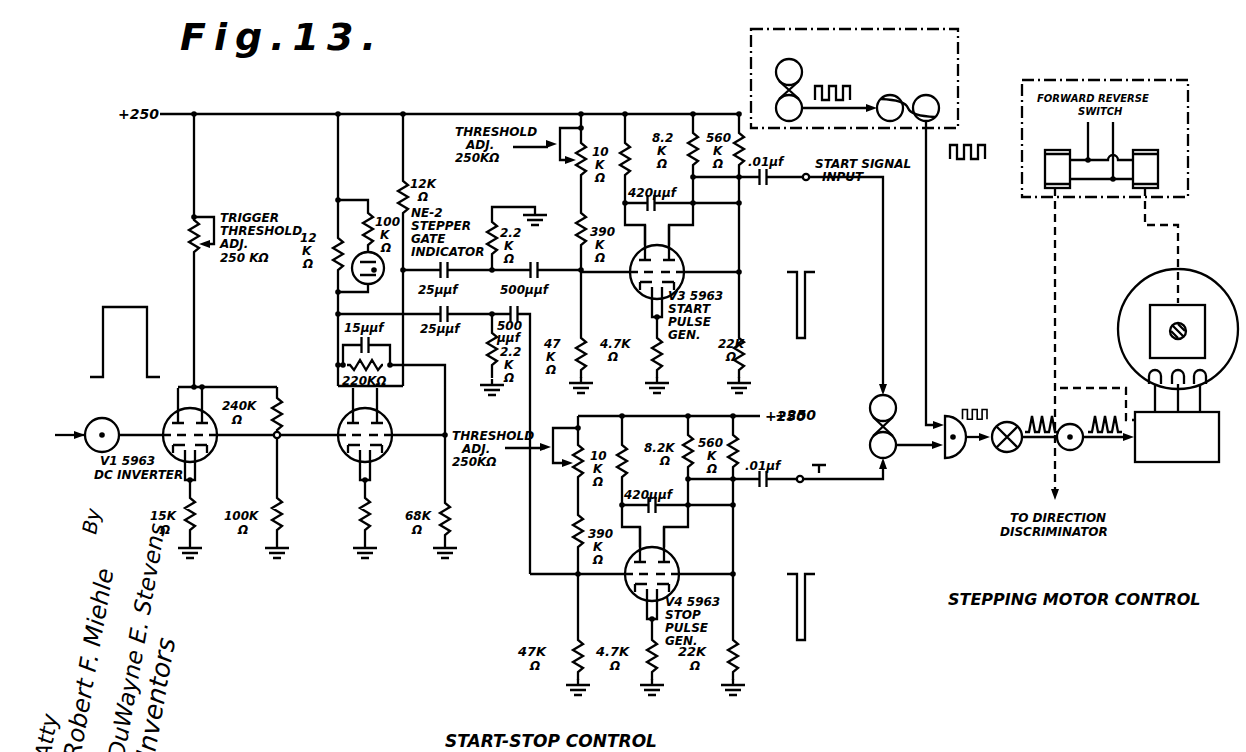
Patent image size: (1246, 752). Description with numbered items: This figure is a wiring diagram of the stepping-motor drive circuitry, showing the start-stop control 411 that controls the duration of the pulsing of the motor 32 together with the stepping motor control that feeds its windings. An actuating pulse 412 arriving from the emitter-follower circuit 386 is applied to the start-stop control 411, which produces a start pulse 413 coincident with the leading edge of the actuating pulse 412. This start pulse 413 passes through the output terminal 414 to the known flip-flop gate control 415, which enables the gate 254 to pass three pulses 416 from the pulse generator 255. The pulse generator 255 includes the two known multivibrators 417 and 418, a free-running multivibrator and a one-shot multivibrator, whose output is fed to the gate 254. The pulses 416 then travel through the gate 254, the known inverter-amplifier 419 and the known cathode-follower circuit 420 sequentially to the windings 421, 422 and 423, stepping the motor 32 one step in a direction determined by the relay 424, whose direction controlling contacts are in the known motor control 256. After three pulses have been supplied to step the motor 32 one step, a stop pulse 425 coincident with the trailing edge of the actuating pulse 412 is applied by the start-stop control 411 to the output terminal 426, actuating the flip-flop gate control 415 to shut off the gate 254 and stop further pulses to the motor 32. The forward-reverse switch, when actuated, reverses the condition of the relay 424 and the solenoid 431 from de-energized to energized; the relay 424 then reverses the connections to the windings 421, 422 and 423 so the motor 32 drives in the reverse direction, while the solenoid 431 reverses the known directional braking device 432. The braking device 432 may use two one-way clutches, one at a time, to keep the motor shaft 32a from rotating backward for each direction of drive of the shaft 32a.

The motor 32 is at (1222, 282).
The motor shaft 32a is at (1170, 333).
The gate 254 is at (958, 460).
The pulse generator 255 is at (966, 50).
The motor control 256 is at (1170, 462).
The emitter-follower circuit 386 is at (120, 405).
The start-stop control 411 is at (384, 574).
The actuating pulse 412 is at (160, 306).
The pulse 413 is at (815, 272).
The output terminal 414 is at (795, 105).
The flip-flop gate control 415 is at (868, 400).
The pulses 416 is at (985, 148).
The multivibrator 417 is at (802, 118).
The multivibrator 418 is at (906, 121).
The inverter-amplifier 419 is at (1004, 452).
The cathode-follower circuit 420 is at (1062, 449).
The winding 421 is at (1150, 376).
The winding 422 is at (1172, 373).
The winding 423 is at (1205, 372).
The relay 424 is at (1045, 153).
The stop pulse 425 is at (838, 560).
The output terminal 426 is at (800, 483).
The solenoid 431 is at (1166, 138).
The directional braking device 432 is at (1162, 306).